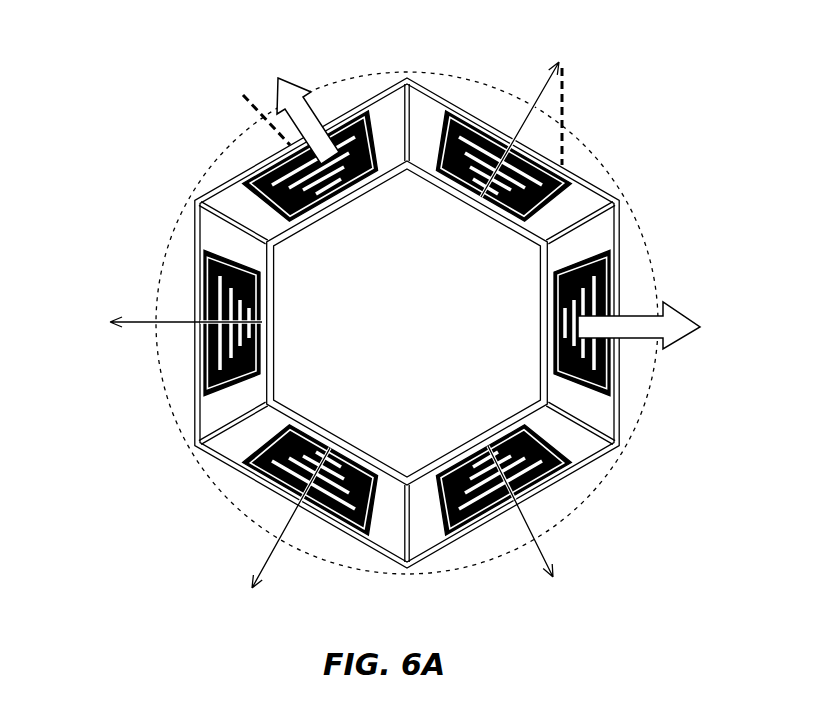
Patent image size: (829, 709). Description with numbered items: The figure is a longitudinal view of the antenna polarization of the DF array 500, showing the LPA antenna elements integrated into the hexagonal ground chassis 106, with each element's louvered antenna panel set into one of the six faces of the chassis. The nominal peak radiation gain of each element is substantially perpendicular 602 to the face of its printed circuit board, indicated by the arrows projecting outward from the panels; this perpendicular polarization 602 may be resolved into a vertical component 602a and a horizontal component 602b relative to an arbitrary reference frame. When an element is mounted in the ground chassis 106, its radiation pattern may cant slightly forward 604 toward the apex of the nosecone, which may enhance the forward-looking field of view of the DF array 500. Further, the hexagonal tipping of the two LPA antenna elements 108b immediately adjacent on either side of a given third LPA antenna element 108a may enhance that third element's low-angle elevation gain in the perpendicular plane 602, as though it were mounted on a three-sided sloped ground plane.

The DF array 500 is at (96, 49).
The ground chassis 106 is at (573, 408).
The third LPA antenna element 108a is at (255, 478).
The adjacent LPA antenna elements 108b is at (205, 365).
The forward cant of radiation pattern 604 is at (293, 100).
The perpendicular polarization 602 is at (520, 122).
The vertical component 602a is at (565, 103).
The horizontal component 602b is at (537, 165).